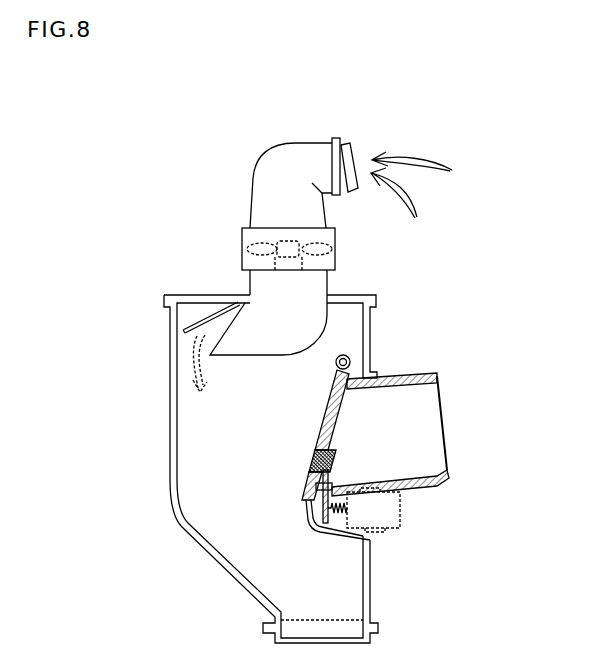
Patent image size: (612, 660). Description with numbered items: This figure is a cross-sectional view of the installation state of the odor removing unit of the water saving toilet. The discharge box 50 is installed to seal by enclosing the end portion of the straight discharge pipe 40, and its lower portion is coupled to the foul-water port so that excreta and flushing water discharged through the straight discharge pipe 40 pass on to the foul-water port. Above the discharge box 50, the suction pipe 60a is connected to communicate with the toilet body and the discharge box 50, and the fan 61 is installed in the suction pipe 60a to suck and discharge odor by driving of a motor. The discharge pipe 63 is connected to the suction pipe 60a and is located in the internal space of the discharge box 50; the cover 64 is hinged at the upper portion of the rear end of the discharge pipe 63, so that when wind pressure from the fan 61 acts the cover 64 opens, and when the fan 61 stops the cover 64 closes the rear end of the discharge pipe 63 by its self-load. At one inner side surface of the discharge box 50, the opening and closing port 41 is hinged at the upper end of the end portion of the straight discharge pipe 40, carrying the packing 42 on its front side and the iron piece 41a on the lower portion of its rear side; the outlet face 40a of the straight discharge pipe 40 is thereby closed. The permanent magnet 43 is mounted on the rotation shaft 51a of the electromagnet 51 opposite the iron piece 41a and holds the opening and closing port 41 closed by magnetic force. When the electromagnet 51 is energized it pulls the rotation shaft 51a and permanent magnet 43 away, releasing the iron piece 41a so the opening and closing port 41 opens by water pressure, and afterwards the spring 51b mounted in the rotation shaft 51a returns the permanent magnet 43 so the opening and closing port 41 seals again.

The straight discharge pipe 40 is at (460, 419).
The filter outlet wall 40a is at (437, 447).
The opening and closing port 41 is at (302, 485).
The iron piece 41a is at (310, 462).
The packing 42 is at (338, 415).
The permanent magnet 43 is at (338, 462).
The discharge box 50 is at (172, 480).
The electromagnet 51 is at (398, 513).
The rotation shaft 51a is at (310, 510).
The spring 51b is at (337, 518).
The suction pipe 60a is at (263, 180).
The fan 61 is at (242, 247).
The discharge pipe 63 is at (317, 318).
The cover 64 is at (187, 322).